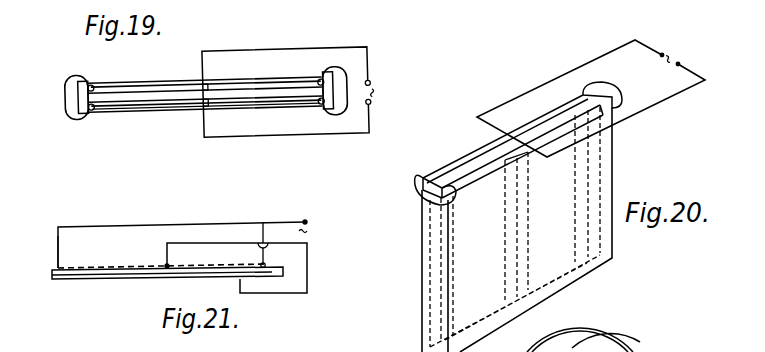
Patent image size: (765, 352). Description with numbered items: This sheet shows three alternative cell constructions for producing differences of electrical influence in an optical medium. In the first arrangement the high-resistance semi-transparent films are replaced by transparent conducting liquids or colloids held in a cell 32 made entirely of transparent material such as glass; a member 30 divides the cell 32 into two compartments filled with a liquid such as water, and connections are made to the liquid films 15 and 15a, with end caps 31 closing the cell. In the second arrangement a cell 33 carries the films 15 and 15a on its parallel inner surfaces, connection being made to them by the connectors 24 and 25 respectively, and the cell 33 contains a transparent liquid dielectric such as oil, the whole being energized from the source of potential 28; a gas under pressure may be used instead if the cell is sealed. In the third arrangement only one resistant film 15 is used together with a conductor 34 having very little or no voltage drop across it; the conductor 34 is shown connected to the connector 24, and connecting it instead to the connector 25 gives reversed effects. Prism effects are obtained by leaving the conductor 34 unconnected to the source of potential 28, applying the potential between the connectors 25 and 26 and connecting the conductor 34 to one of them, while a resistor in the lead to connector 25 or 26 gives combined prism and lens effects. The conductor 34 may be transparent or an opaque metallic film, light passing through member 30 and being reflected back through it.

In FIG. 19, the resistant film 15 is at (163, 80).
In FIG. 21, the resistant film 15 is at (125, 268).
In FIG. 20, the resistant film 15 is at (460, 162).
In FIG. 19, the second resistant film 15a is at (165, 109).
In FIG. 20, the second resistant film 15a is at (471, 168).
In FIG. 19, the connector 24 is at (205, 87).
In FIG. 21, the connector 24 is at (165, 266).
In FIG. 20, the connector 24 is at (506, 141).
In FIG. 19, the connector 25 is at (207, 101).
In FIG. 21, the connector 25 is at (267, 265).
In FIG. 20, the connector 25 is at (526, 152).
In FIG. 21, the connector 26 is at (57, 266).
In FIG. 19, the source of potential 28 is at (371, 106).
In FIG. 21, the source of potential 28 is at (310, 231).
In FIG. 20, the source of potential 28 is at (672, 57).
In FIG. 19, the dividing member 30 is at (126, 107).
In FIG. 21, the dividing member 30 is at (75, 277).
In FIG. 19, the end cap 31 is at (78, 72).
In FIG. 20, the end cap 31 is at (420, 188).
In FIG. 19, the cell 32 is at (78, 101).
In FIG. 20, the cell 32 is at (619, 101).
In FIG. 19, the cell 33 is at (334, 118).
In FIG. 20, the cell 33 is at (428, 283).
In FIG. 21, the conductor 34 is at (146, 279).